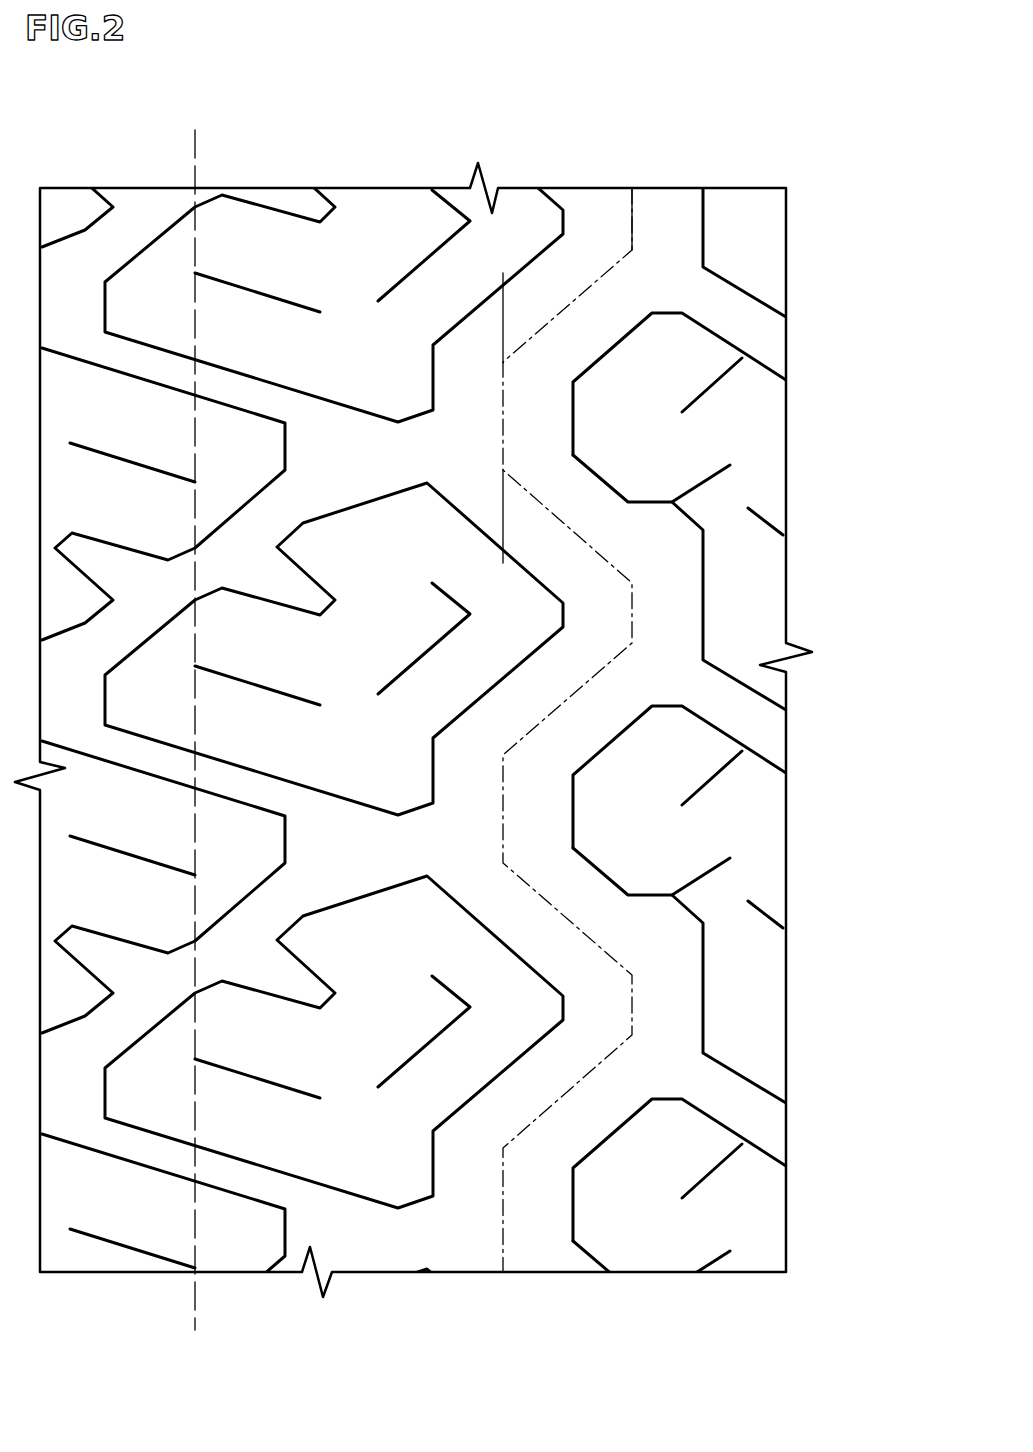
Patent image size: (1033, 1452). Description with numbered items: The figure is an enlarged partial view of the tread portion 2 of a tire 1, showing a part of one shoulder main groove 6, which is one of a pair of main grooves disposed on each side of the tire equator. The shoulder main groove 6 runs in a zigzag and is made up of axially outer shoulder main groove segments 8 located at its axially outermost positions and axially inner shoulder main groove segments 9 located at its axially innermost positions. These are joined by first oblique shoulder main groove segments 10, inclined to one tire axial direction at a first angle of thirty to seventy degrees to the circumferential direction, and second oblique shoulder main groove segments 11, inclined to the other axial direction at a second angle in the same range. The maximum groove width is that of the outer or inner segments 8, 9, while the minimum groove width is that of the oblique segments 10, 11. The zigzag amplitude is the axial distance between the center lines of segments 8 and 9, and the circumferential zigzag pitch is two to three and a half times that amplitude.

The pneumatic tire 1 is at (820, 140).
The tread portion 2 is at (733, 122).
The shoulder main groove 6 is at (832, 326).
The axially outer shoulder main groove segment 8 is at (680, 252).
The axially inner shoulder main groove segment 9 is at (573, 443).
The first oblique shoulder main groove segment 10 is at (613, 308).
The second oblique shoulder main groove segment 11 is at (587, 498).